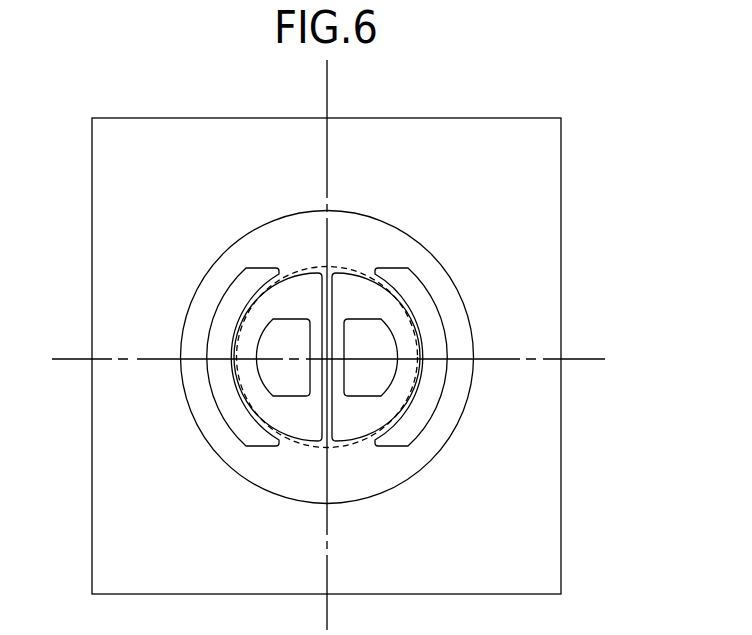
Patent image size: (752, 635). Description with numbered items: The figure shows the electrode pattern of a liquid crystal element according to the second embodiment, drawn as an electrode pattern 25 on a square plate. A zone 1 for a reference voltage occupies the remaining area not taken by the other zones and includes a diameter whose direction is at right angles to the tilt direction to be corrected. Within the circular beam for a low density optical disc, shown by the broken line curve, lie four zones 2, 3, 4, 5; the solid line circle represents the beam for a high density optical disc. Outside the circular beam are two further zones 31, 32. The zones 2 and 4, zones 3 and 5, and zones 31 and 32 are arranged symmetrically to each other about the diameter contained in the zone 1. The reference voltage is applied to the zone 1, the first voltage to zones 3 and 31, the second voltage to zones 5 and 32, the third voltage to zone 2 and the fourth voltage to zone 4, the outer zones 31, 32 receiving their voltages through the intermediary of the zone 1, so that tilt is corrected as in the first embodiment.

The zone for a reference voltage 1 is at (97, 179).
The zone 2 is at (290, 327).
The zone 3 is at (275, 300).
The zone 4 is at (355, 327).
The zone 5 is at (379, 302).
The electrode assembly 25 is at (566, 117).
The zone 31 is at (242, 276).
The zone 32 is at (413, 277).